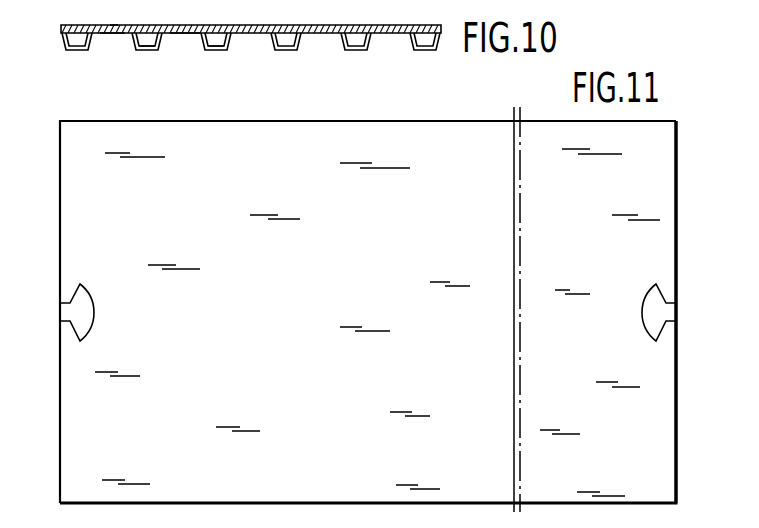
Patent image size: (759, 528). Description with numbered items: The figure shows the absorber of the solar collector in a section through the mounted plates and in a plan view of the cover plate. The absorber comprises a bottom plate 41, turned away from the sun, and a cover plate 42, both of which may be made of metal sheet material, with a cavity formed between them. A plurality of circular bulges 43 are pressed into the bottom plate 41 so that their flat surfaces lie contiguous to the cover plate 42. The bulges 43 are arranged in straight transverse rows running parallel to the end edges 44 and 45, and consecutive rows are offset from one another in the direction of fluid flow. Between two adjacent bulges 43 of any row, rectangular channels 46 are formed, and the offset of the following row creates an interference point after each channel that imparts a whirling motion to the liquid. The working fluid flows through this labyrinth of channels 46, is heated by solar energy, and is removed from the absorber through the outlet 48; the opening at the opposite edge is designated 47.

In FIG. 10, the bottom plate 41 is at (282, 52).
In FIG. 10, the cover plate 42 is at (111, 25).
In FIG. 11, the cover plate 42 is at (680, 176).
In FIG. 10, the circular bulges 43 is at (112, 34).
In FIG. 11, the end edge 44 is at (60, 197).
In FIG. 11, the end edge 45 is at (678, 228).
In FIG. 10, the rectangular channels 46 is at (146, 48).
In FIG. 11, the notch 47 is at (62, 316).
In FIG. 11, the outlet 48 is at (655, 312).